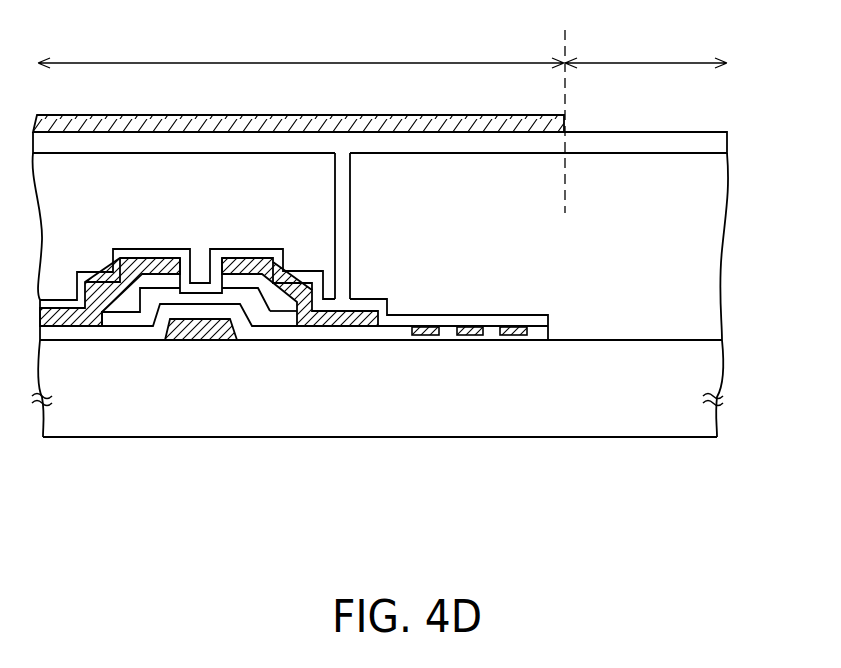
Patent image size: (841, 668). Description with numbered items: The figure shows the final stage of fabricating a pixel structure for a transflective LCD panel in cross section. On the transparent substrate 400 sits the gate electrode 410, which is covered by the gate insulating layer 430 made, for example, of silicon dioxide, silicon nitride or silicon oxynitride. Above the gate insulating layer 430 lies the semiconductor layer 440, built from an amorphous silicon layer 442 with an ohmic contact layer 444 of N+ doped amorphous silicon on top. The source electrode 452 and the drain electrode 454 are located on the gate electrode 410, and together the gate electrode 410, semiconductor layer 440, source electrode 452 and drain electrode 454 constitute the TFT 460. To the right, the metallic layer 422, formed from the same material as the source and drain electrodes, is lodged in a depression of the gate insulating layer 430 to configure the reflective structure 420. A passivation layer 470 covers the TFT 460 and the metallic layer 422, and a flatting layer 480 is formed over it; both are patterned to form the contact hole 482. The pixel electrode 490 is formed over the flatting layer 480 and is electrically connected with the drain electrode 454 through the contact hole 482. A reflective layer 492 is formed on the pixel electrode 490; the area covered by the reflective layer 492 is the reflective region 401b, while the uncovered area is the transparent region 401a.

The transparent substrate 400 is at (717, 360).
The transparent region 401a is at (646, 121).
The reflective region 401b is at (301, 48).
The gate electrode 410 is at (183, 325).
The reflective structure 420 is at (469, 357).
The metallic layer 422 is at (432, 335).
The gate insulating layer 430 is at (72, 333).
The semiconductor layer 440 is at (294, 411).
The amorphous silicon layer 442 is at (265, 319).
The ohmic contact layer 444 is at (287, 304).
The source electrode 452 is at (155, 290).
The drain electrode 454 is at (233, 265).
The TFT 460 is at (294, 323).
The passivation layer 470 is at (158, 264).
The flatting layer 480 is at (713, 205).
The contact hole 482 is at (352, 272).
The pixel electrode 490 is at (717, 145).
The reflective layer 492 is at (527, 122).